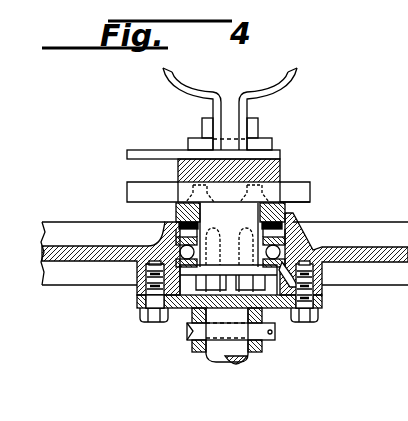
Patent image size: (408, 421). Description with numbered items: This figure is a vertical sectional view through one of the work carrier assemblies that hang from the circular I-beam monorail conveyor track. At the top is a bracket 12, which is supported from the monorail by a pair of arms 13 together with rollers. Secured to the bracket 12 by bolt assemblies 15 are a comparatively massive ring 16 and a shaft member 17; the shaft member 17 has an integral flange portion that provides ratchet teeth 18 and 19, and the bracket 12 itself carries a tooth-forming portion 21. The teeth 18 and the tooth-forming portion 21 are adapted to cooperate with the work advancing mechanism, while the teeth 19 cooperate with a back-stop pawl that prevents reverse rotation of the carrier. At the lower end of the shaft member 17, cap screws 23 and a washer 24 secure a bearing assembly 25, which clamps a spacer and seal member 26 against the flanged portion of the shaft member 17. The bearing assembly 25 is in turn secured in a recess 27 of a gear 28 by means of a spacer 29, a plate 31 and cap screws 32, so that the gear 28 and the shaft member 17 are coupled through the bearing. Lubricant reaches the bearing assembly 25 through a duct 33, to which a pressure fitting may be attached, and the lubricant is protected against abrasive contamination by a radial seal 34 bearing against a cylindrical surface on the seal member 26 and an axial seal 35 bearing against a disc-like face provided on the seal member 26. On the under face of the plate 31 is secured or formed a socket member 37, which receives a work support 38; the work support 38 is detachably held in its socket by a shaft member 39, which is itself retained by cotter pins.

The bracket 12 is at (228, 107).
The arms 13 is at (178, 92).
The bolt assemblies 15 is at (270, 144).
The ring 16 is at (282, 164).
The shaft member 17 is at (238, 227).
The ratchet teeth 18 is at (130, 191).
The ratchet teeth 19 is at (306, 188).
The tooth-forming portion 21 is at (133, 154).
The cap screws 23 is at (188, 314).
The washer 24 is at (278, 310).
The bearing assembly 25 is at (323, 270).
The spacer and seal member 26 is at (178, 206).
The recess 27 is at (173, 258).
The gear 28 is at (77, 266).
The spacer 29 is at (158, 322).
The plate 31 is at (136, 304).
The cap screws 32 is at (143, 319).
The duct 33 is at (313, 247).
The radial seal 34 is at (308, 222).
The axial seal 35 is at (285, 211).
The socket member 37 is at (199, 352).
The work support 38 is at (241, 351).
The shaft member 39 is at (191, 338).